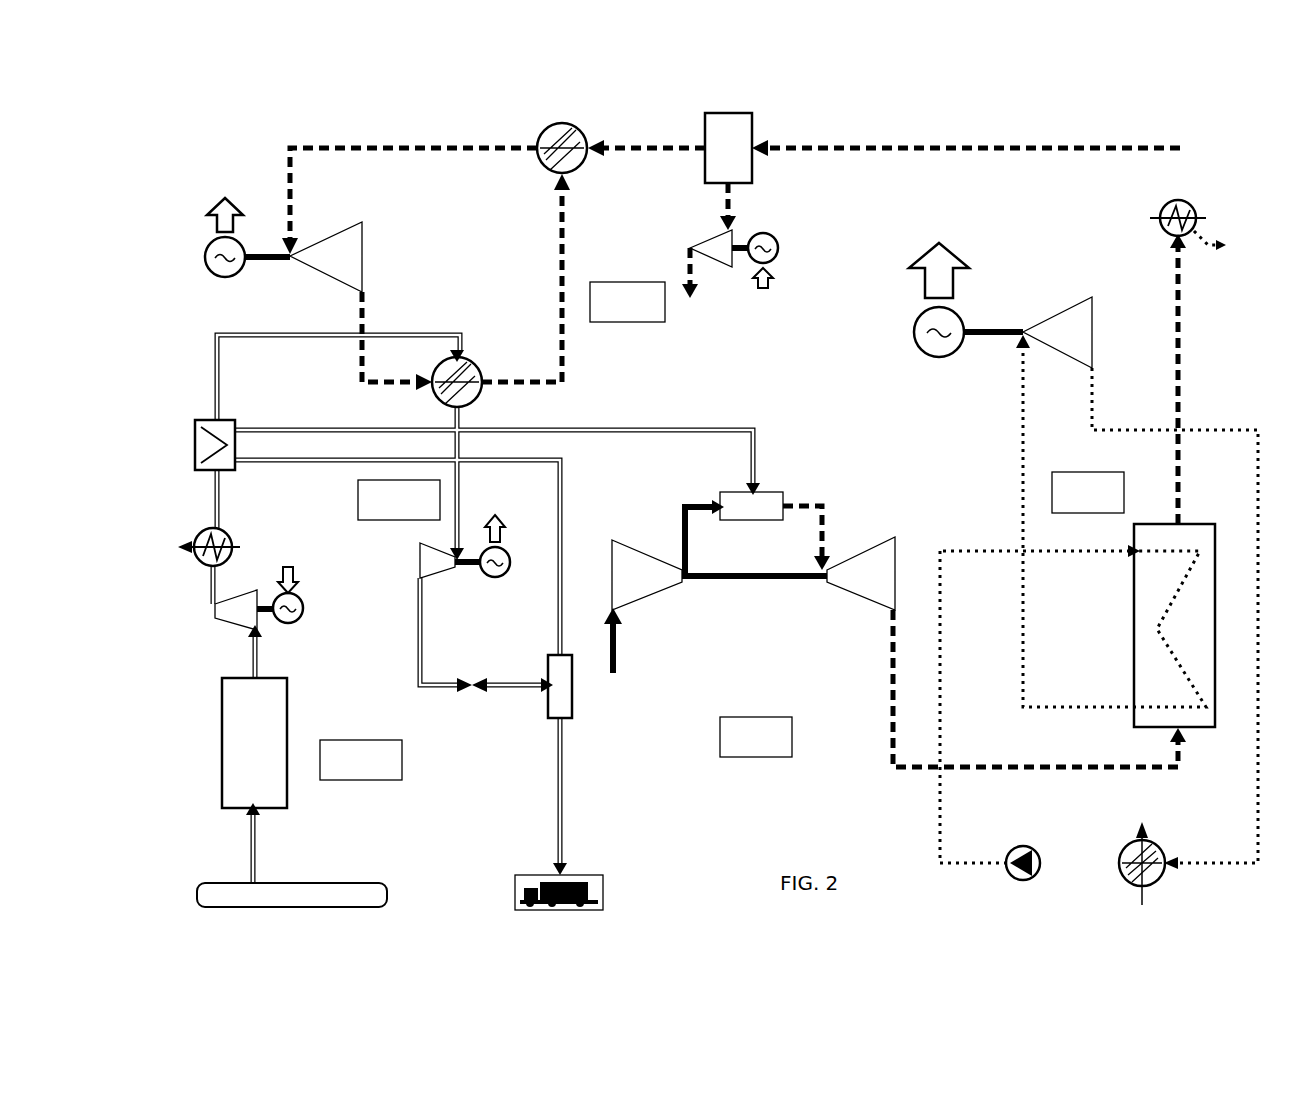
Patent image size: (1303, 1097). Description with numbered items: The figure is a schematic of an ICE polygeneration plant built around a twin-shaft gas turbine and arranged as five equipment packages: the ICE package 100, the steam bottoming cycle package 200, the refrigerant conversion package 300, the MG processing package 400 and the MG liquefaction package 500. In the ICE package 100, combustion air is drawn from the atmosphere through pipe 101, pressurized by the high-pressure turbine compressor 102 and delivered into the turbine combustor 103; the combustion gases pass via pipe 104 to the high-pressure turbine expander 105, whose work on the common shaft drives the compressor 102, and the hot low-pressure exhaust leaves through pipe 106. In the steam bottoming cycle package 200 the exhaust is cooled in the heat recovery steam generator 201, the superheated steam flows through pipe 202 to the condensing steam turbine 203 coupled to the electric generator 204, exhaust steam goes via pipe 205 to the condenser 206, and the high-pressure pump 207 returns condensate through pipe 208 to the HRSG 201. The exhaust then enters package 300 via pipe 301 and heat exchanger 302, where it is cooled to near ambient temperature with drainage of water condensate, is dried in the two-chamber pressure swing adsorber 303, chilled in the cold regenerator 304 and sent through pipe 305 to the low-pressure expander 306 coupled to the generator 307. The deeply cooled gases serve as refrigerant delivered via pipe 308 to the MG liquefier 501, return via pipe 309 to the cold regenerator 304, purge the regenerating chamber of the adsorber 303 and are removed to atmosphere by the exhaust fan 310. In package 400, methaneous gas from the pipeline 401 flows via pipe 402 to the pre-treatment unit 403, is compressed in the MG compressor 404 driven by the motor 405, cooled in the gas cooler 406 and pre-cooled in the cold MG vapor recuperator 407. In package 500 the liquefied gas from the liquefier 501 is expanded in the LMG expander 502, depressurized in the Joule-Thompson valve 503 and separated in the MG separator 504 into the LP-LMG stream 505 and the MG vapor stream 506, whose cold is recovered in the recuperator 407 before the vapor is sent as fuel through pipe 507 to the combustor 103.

The ICE package 100 is at (756, 737).
The pipe 101 is at (616, 668).
The high-pressure turbine compressor 102 is at (626, 540).
The turbine combustor 103 is at (770, 520).
The pipe 104 is at (822, 518).
The high-pressure turbine expander 105 is at (880, 598).
The pipe 106 is at (893, 722).
The steam bottoming cycle package 200 is at (1088, 492).
The heat recovery steam generator 201 is at (1200, 727).
The pipe 202 is at (1024, 617).
The condensing steam turbine 203 is at (1080, 308).
The electric generator 204 is at (920, 345).
The pipe 205 is at (1100, 430).
The condenser 206 is at (1166, 848).
The high-pressure pump 207 is at (1010, 848).
The pipe 208 is at (940, 840).
The refrigerant conversion package 300 is at (627, 302).
The pipe 301 is at (1180, 355).
The heat exchanger 302 is at (1192, 205).
The pressure swing adsorber 303 is at (752, 125).
The cold regenerator 304 is at (580, 135).
The pipe 305 is at (410, 148).
The low-pressure expander 306 is at (358, 246).
The generator 307 is at (225, 278).
The pipe 308 is at (355, 370).
The pipe 309 is at (562, 265).
The exhaust fan 310 is at (695, 240).
The MG processing package 400 is at (361, 760).
The pipeline 401 is at (365, 883).
The pipe 402 is at (256, 850).
The pre-treatment unit 403 is at (287, 688).
The MG compressor 404 is at (240, 625).
The motor 405 is at (300, 622).
The gas cooler 406 is at (233, 530).
The cold MG vapor recuperator 407 is at (235, 420).
The MG liquefaction package 500 is at (399, 500).
The MG liquefier 501 is at (482, 395).
The LMG expander 502 is at (420, 570).
The Joule-Thompson valve 503 is at (475, 678).
The MG separator 504 is at (548, 720).
The LP-LMG stream 505 is at (562, 780).
The MG vapor stream 506 is at (560, 608).
The pipe 507 is at (640, 430).